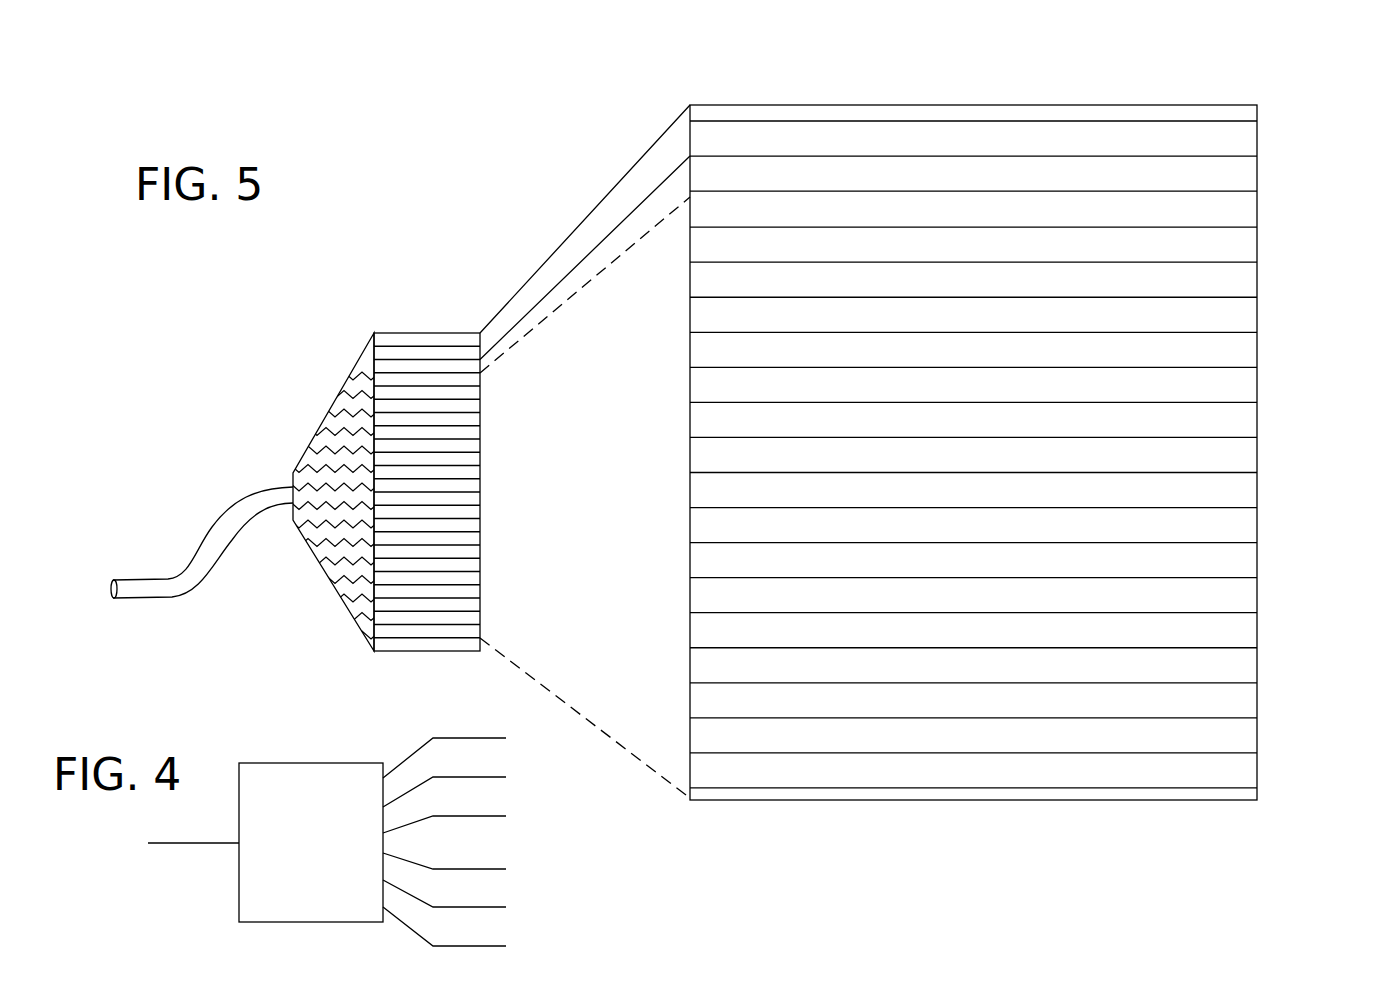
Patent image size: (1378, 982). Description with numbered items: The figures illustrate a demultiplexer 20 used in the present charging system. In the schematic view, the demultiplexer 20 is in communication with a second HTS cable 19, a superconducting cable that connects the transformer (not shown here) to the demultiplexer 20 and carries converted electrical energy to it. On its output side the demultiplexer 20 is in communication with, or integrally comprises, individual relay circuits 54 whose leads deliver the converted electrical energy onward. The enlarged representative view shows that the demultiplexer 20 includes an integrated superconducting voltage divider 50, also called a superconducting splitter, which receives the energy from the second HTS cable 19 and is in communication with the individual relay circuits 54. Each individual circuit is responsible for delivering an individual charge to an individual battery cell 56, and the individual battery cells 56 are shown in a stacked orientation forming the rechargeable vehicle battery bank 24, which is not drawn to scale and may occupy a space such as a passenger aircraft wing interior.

In FIG. 5, the second HTS cable 19 is at (148, 578).
In FIG. 4, the second HTS cable 19 is at (183, 845).
In FIG. 5, the demultiplexer 20 is at (355, 441).
In FIG. 4, the demultiplexer 20 is at (303, 762).
In FIG. 5, the rechargeable vehicle battery bank 24 is at (1011, 415).
In FIG. 5, the integrated superconducting voltage divider 50 is at (310, 591).
In FIG. 5, the individual relay circuits 54 is at (430, 333).
In FIG. 4, the individual relay circuits 54 is at (438, 722).
In FIG. 5, the individual battery cell 56 is at (1257, 170).